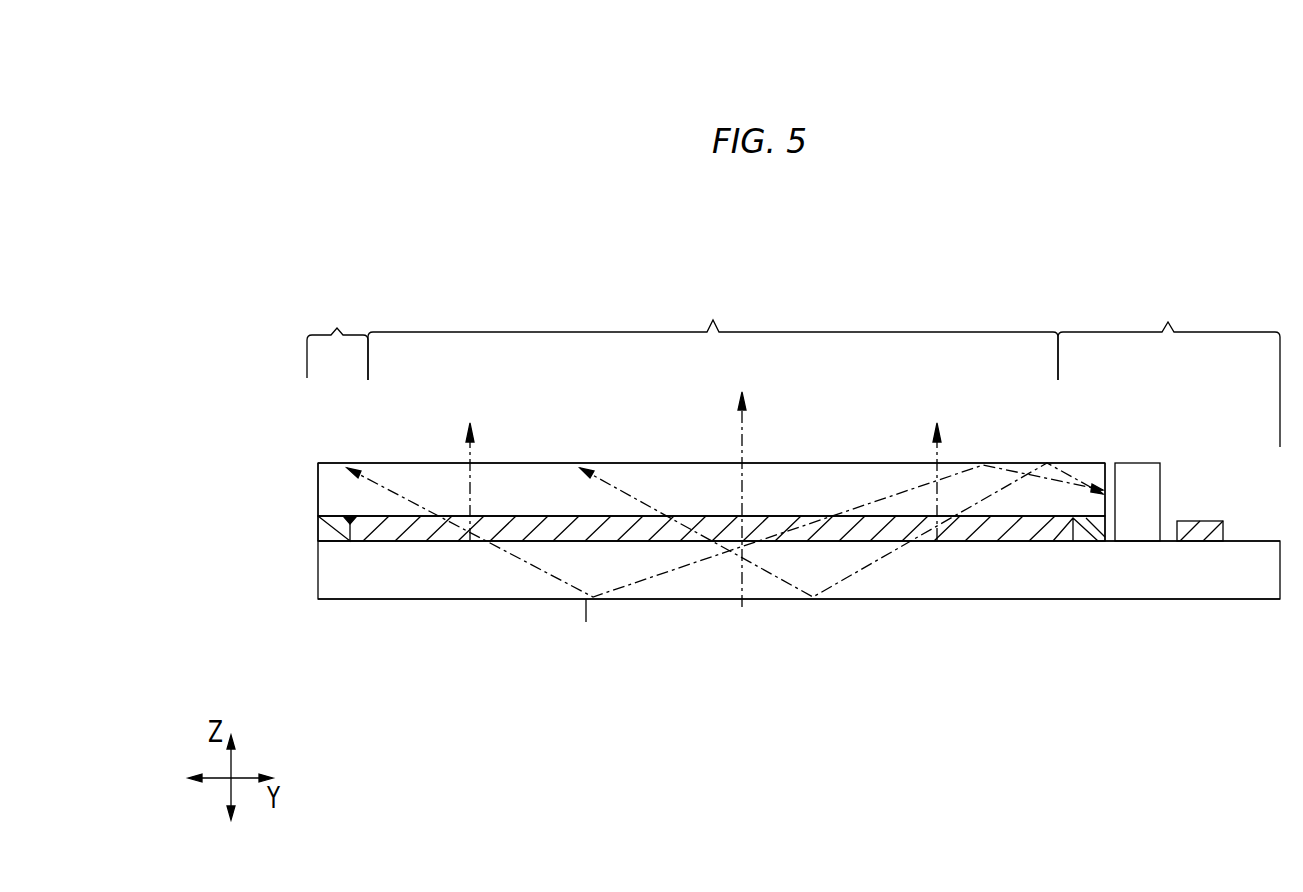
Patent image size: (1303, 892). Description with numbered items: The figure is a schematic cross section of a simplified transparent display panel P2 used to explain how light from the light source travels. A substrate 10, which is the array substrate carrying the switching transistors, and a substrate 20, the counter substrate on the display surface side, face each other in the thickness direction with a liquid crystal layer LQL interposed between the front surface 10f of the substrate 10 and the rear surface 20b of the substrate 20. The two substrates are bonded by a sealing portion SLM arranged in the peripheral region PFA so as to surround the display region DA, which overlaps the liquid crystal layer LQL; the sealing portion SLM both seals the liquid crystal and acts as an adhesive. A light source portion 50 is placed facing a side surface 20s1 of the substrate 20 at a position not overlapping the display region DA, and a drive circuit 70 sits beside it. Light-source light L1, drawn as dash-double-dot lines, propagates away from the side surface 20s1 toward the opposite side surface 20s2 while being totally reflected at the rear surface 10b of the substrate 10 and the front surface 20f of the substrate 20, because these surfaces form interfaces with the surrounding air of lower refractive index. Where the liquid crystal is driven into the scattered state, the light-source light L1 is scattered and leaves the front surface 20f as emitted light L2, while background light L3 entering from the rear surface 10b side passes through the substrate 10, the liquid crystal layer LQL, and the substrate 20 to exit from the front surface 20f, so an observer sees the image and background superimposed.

The substrate 10 is at (343, 572).
The substrate 20 is at (340, 492).
The light source portion 50 is at (1133, 520).
The drive circuit 70 is at (1199, 522).
The front surface 10f is at (640, 536).
The rear surface 10b is at (603, 605).
The front surface 20f is at (596, 452).
The rear surface 20b is at (579, 520).
The side surface 20s1 is at (1117, 478).
The side surface 20s2 is at (306, 484).
The sealing portion SLM is at (327, 532).
The liquid crystal layer LQL is at (507, 533).
The light-source light L1 is at (1020, 483).
The emitted light L2 is at (470, 485).
The background light L3 is at (742, 455).
The display panel P2 is at (525, 297).
The peripheral region PFA is at (793, 366).
The display region DA is at (713, 333).